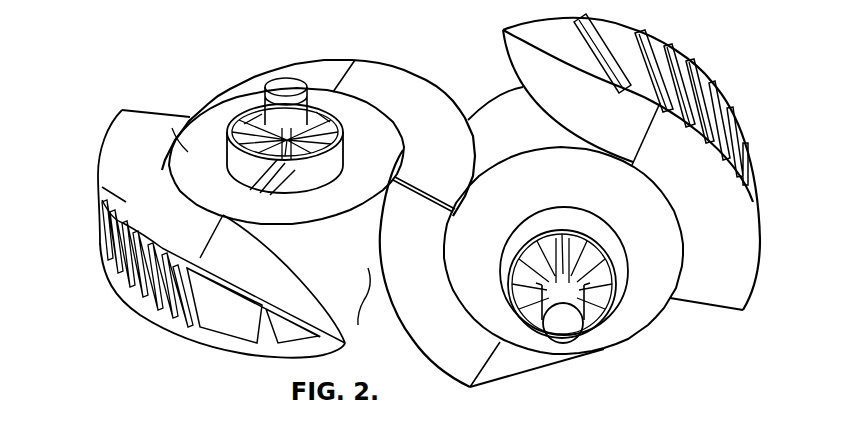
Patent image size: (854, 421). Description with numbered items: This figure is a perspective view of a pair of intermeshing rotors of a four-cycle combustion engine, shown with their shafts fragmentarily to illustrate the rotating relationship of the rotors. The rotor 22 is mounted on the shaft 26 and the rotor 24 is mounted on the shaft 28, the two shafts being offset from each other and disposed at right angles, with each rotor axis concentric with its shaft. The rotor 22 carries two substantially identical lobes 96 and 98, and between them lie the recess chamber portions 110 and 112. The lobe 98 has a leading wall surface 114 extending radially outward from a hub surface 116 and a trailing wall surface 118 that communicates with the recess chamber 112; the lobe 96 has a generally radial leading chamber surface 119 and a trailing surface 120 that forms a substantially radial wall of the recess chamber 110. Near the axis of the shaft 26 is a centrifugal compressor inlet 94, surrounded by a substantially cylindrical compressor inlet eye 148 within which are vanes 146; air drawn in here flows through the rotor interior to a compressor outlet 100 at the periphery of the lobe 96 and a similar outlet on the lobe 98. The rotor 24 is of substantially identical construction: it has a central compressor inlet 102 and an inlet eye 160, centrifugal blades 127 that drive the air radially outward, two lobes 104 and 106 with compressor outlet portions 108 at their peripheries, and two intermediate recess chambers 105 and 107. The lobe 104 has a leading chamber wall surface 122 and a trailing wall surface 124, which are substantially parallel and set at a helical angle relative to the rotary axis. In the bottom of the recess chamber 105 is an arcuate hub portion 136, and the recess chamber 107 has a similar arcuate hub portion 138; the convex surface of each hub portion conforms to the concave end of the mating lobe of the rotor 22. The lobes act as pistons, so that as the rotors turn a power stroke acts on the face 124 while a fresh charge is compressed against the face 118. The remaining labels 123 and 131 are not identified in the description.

The rotor 22 is at (92, 158).
The rotor 24 is at (752, 193).
The shaft 26 is at (236, 132).
The shaft 28 is at (577, 327).
The centrifugal compressor inlet 94 is at (238, 150).
The lobe 96 is at (100, 213).
The lobe 98 is at (425, 103).
The compressor outlet 100 is at (128, 250).
The central compressor inlet 102 is at (593, 270).
The lobe 104 is at (710, 157).
The recess chamber 105 is at (497, 103).
The lobe 106 is at (440, 349).
The recess chamber 107 is at (570, 363).
The compressor outlet portions 108 is at (647, 73).
The recess chamber portion 110 is at (207, 104).
The recess chamber portion 112 is at (363, 309).
The leading wall surface 114 is at (310, 72).
The hub surface 116 is at (240, 94).
The trailing wall surface 118 is at (450, 176).
The leading chamber surface 119 is at (277, 284).
The trailing surface 120 is at (143, 110).
The leading chamber wall surface 122 is at (693, 308).
The base edge 123 is at (505, 364).
The trailing wall surface 124 is at (578, 117).
The blades 127 is at (613, 53).
The slot panel 131 is at (150, 324).
The arcuate hub portion 136 is at (515, 140).
The arcuate hub portion 138 is at (660, 314).
The vanes 146 is at (260, 185).
The compressor inlet eye 148 is at (393, 120).
The inlet eye 160 is at (587, 233).